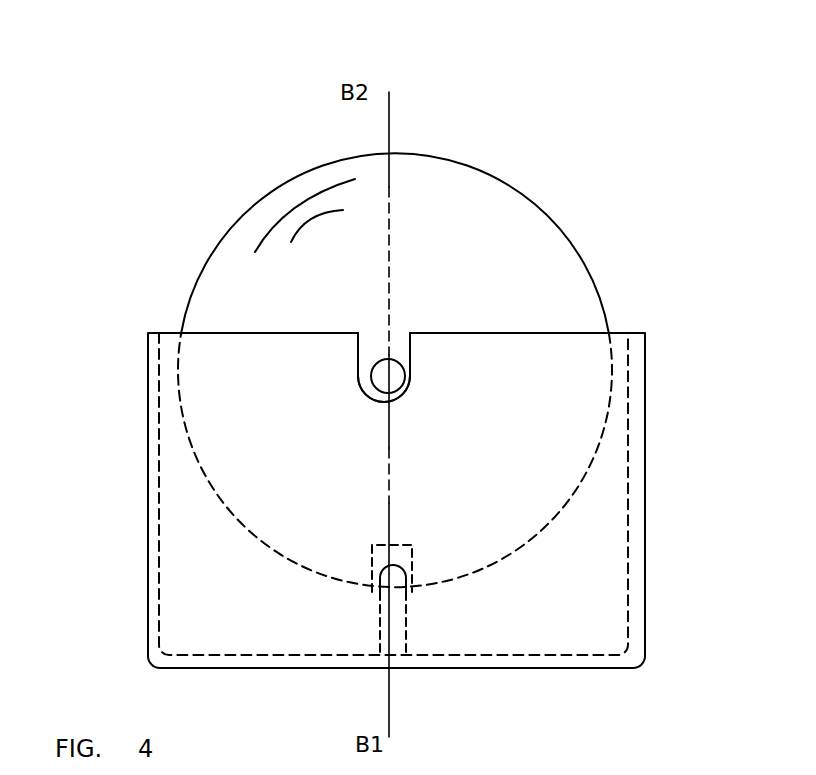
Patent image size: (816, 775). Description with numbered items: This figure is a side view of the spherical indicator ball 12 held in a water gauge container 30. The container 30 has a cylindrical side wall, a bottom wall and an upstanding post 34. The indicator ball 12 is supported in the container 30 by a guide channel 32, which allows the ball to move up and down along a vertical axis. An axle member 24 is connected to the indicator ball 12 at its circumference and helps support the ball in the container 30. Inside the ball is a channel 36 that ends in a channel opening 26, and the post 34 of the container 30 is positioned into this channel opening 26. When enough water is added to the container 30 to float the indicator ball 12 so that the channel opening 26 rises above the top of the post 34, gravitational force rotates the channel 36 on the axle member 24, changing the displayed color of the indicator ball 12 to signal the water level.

The indicator ball 12 is at (573, 243).
The axle member 24 is at (397, 363).
The channel opening 26 is at (378, 590).
The container 30 is at (645, 418).
The guide channel 32 is at (358, 353).
The post 34 is at (405, 637).
The channel 36 is at (406, 566).